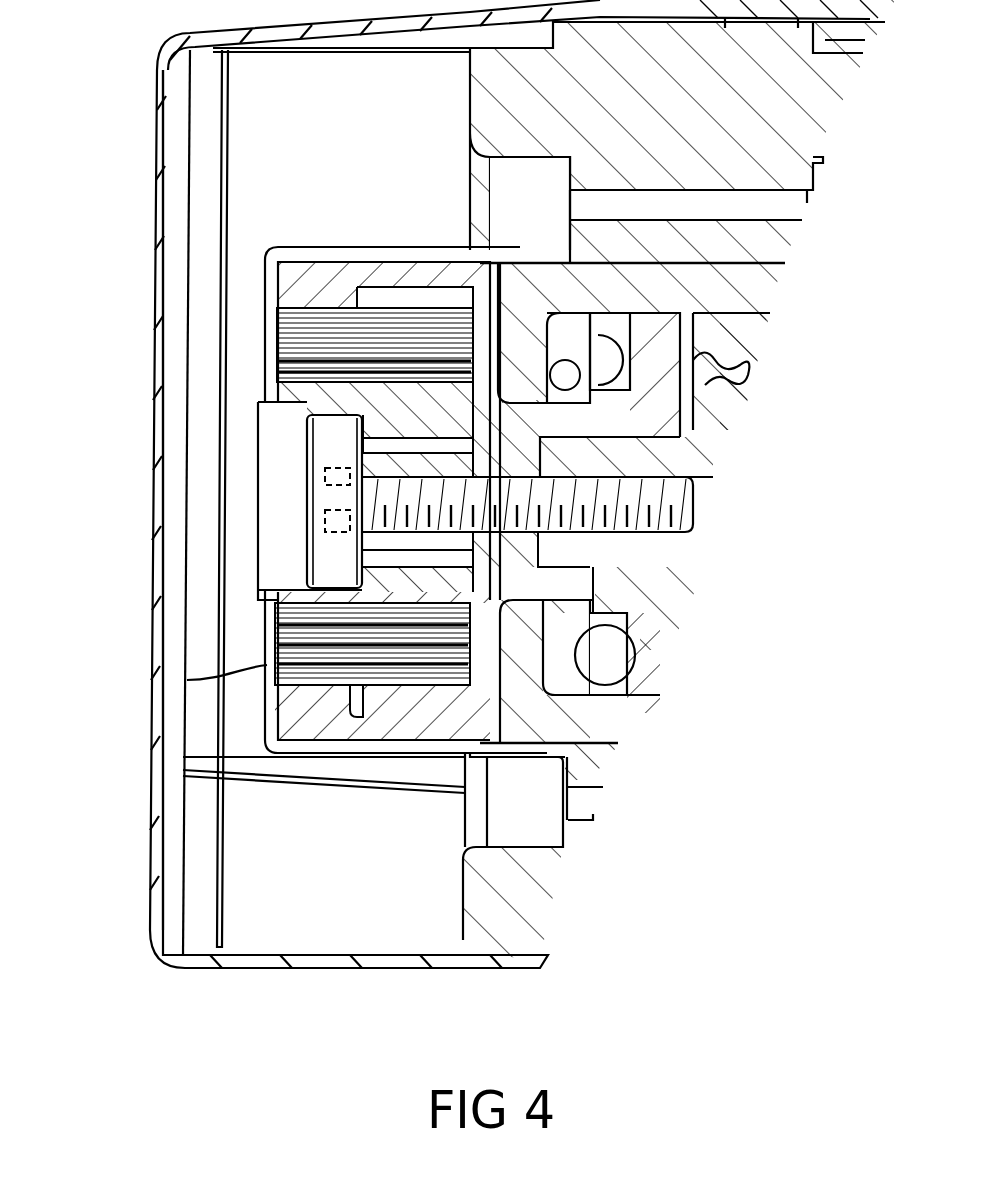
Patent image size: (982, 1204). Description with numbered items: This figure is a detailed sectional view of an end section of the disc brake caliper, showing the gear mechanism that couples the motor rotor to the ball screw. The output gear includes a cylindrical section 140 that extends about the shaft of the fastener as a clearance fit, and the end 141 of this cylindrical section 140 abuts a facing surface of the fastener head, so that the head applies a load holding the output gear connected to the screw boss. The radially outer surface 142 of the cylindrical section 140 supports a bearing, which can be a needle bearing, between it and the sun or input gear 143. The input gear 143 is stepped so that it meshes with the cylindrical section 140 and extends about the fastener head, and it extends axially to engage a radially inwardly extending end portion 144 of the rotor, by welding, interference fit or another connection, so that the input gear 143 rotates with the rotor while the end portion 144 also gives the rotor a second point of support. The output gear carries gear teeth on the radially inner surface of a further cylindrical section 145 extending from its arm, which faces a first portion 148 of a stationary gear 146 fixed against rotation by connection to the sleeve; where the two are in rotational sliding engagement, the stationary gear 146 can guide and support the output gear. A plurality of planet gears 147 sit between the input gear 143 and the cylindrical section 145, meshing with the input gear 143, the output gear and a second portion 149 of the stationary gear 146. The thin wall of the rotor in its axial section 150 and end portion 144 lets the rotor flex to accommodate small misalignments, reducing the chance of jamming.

The cylindrical section 140 is at (402, 538).
The end 141 is at (440, 552).
The radially outer surface 142 is at (440, 552).
The input gear 143 is at (307, 398).
The end portion 144 is at (265, 320).
The cylindrical section 145 is at (427, 702).
The stationary gear 146 is at (290, 712).
The planet gears 147 is at (267, 358).
The first portion 148 is at (465, 730).
The second portion 149 is at (300, 715).
The axial section 150 is at (388, 248).